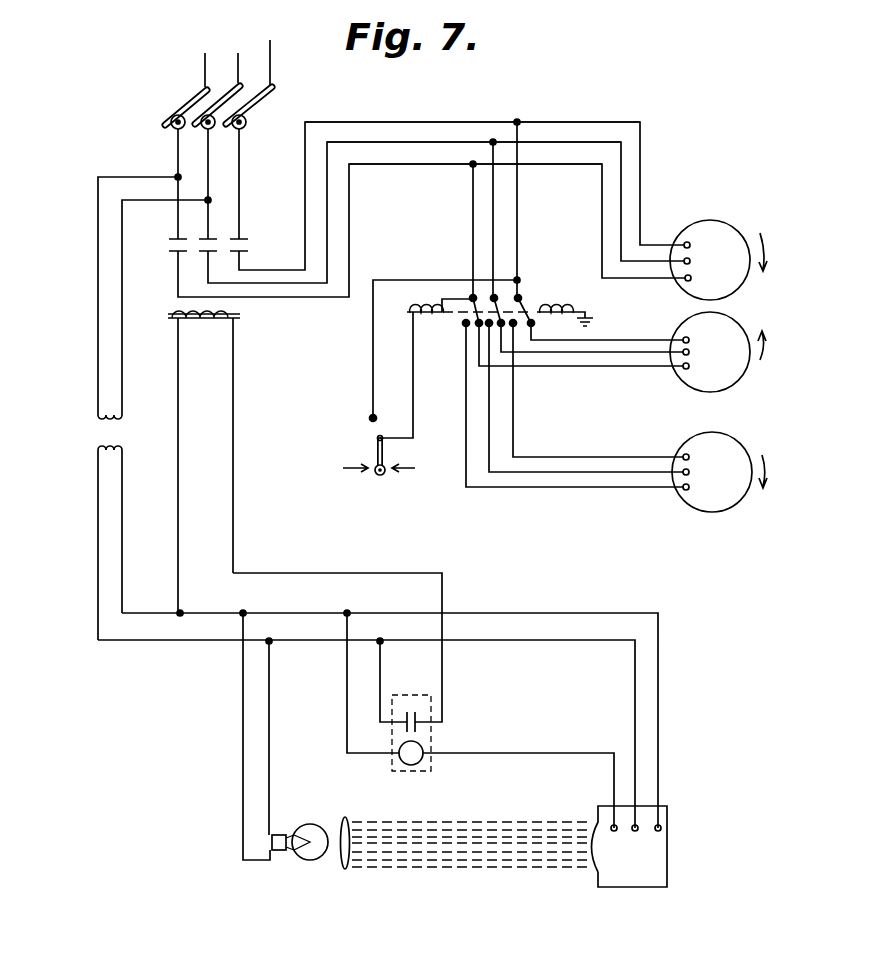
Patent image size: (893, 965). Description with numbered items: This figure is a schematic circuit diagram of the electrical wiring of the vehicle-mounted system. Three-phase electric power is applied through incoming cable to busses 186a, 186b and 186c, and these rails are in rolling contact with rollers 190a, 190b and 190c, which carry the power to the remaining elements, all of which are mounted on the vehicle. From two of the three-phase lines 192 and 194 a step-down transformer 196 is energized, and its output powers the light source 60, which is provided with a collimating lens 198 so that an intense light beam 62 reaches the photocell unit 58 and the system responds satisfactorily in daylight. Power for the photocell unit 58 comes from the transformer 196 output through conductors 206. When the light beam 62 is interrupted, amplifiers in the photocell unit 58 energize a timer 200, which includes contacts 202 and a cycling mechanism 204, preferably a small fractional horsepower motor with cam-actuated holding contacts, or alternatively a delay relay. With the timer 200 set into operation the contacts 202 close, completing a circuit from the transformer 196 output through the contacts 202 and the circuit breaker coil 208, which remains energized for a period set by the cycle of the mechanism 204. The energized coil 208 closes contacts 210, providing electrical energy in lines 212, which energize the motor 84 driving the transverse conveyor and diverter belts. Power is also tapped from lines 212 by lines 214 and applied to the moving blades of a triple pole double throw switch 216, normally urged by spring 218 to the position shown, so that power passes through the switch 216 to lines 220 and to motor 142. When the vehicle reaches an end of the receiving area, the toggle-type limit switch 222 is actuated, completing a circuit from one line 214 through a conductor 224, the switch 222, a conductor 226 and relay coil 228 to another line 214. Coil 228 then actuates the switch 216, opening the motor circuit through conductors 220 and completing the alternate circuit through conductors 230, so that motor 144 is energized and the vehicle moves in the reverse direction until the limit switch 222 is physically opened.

The photocell unit 58 is at (612, 873).
The light source 60 is at (313, 855).
The light beam 62 is at (478, 868).
The motor 84 is at (715, 230).
The motor 142 is at (727, 380).
The motor 144 is at (728, 502).
The bus 186a is at (190, 104).
The bus 186b is at (228, 100).
The bus 186c is at (260, 105).
The roller 190a is at (170, 122).
The roller 190b is at (216, 127).
The roller 190c is at (247, 121).
The three-phase line 192 is at (175, 168).
The three-phase line 194 is at (209, 185).
The step-down transformer 196 is at (107, 430).
The collimating lens 198 is at (342, 870).
The timer 200 is at (427, 736).
The contacts 202 is at (410, 702).
The cycling mechanism 204 is at (415, 762).
The conductors 206 is at (542, 640).
The circuit breaker coil 208 is at (207, 327).
The contacts 210 is at (233, 250).
The lines 212 is at (388, 164).
The lines 214 is at (517, 195).
The triple pole double throw switch 216 is at (522, 300).
The spring 218 is at (557, 303).
The lines 220 is at (603, 367).
The limit switch 222 is at (377, 445).
The conductor 224 is at (393, 280).
The conductor 226 is at (418, 388).
The relay coil 228 is at (432, 320).
The conductors 230 is at (555, 487).